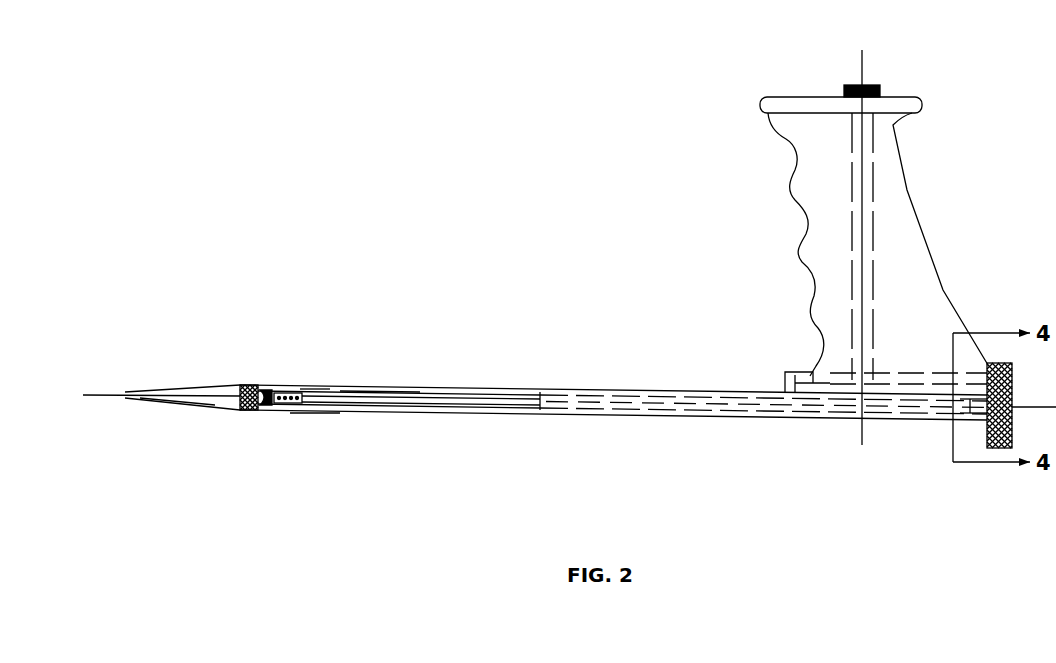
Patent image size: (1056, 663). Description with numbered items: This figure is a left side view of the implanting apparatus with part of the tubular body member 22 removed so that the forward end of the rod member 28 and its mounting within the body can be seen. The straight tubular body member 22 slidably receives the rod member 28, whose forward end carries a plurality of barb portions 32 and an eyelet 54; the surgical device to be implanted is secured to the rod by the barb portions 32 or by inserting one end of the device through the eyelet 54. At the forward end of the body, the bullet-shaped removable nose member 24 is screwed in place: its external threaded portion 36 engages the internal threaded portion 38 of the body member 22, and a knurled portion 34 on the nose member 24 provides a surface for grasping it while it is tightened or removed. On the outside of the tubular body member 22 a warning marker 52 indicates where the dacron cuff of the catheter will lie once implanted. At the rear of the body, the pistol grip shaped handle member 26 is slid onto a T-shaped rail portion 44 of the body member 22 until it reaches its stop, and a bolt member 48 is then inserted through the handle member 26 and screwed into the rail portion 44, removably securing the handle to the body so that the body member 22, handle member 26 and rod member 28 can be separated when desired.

The tubular body member 22 is at (627, 418).
The nose member 24 is at (182, 387).
The handle member 26 is at (918, 291).
The rod member 28 is at (430, 404).
The barb portions 32 is at (276, 410).
The knurled portion 34 is at (252, 385).
The external threaded portion 36 is at (308, 415).
The internal threaded portion 38 is at (312, 384).
The T-shaped rail portion 44 is at (924, 366).
The bolt member 48 is at (877, 85).
The warning marker 52 is at (380, 354).
The eyelet 54 is at (273, 386).